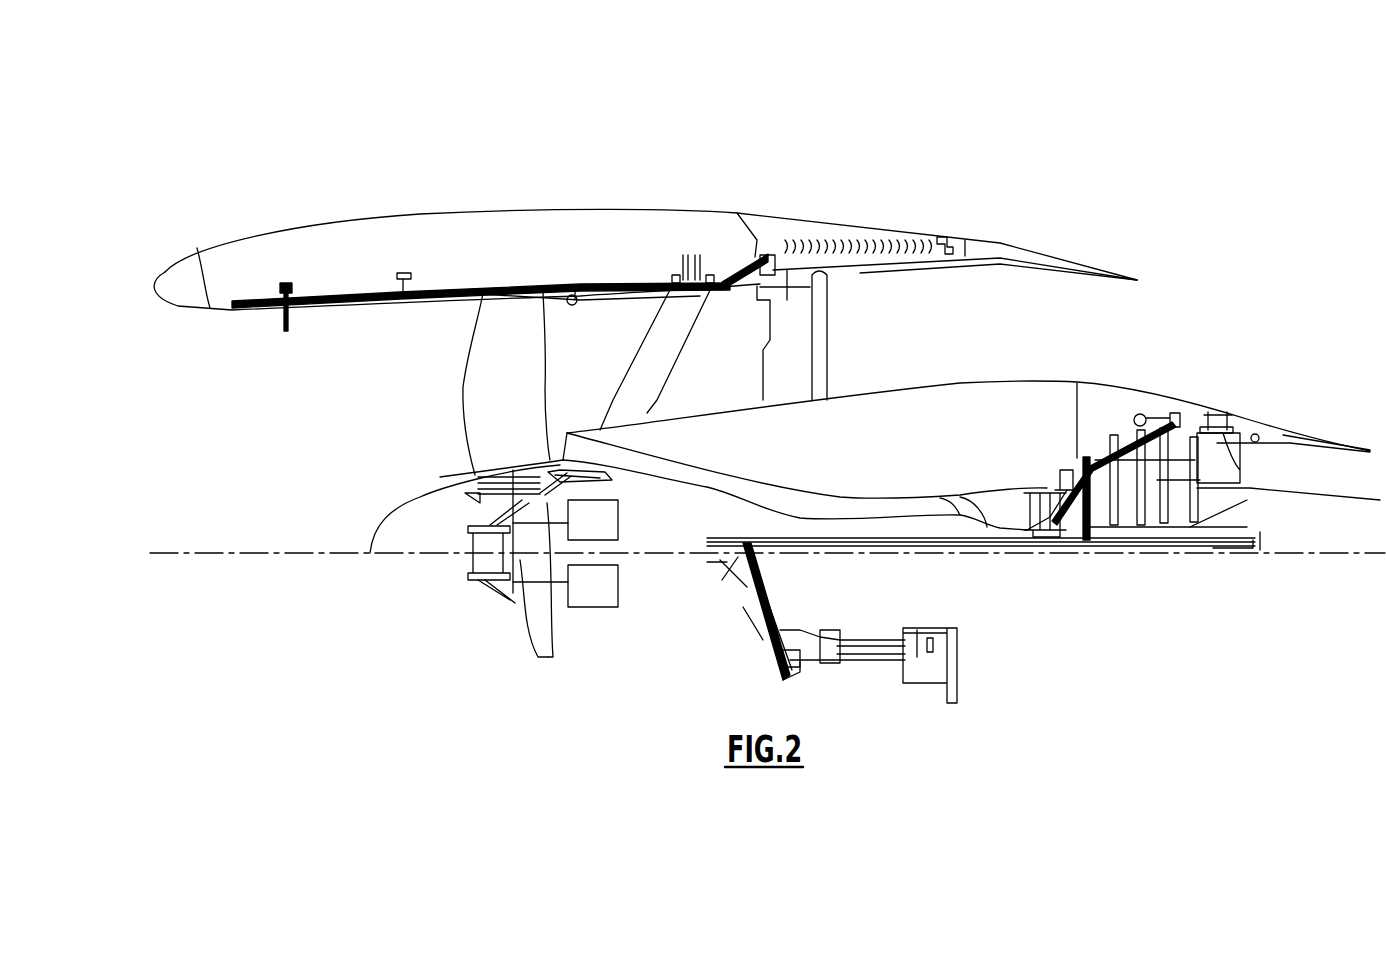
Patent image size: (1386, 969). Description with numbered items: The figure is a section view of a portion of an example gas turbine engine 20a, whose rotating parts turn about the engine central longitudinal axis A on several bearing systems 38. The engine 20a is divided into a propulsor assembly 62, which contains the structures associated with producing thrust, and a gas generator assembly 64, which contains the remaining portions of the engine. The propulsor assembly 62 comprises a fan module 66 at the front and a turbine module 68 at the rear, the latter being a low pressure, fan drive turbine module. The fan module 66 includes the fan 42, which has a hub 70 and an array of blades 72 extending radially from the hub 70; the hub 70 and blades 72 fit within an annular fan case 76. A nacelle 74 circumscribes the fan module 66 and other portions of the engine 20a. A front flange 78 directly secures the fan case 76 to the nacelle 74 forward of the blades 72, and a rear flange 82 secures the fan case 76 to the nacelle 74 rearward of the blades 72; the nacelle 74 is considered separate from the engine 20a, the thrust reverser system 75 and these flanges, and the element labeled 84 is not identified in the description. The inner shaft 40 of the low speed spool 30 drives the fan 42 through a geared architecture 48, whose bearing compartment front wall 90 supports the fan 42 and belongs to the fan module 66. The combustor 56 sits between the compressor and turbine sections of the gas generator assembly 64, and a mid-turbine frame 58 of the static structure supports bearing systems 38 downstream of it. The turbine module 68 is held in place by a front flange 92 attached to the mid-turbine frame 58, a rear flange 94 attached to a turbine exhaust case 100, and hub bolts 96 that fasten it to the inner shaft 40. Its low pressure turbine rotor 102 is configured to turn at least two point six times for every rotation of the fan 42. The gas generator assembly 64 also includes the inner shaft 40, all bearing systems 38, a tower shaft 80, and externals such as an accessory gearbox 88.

The gas turbine engine 20a is at (1217, 303).
The low speed spool 30 is at (940, 556).
The bearing systems 38 is at (1100, 540).
The inner shaft 40 is at (1097, 547).
The fan 42 is at (523, 370).
The geared architecture 48 is at (591, 607).
The combustor 56 is at (987, 507).
The mid-turbine frame 58 is at (1065, 470).
The propulsor assembly 62 is at (477, 583).
The gas generator assembly 64 is at (916, 340).
The fan module 66 is at (417, 378).
The turbine module 68 is at (1173, 413).
The hub 70 is at (400, 507).
The blades 72 is at (460, 413).
The nacelle 74 is at (483, 212).
The thrust reverser system 75 is at (890, 226).
The fan case 76 is at (580, 295).
The front flange 78 is at (432, 285).
The tower shaft 80 is at (777, 610).
The rear flange 82 is at (718, 273).
The leading edge 84 is at (170, 283).
The accessory gearbox 88 is at (958, 653).
The bearing compartment front wall 90 is at (545, 655).
The front flange 92 is at (1077, 400).
The rear flange 94 is at (1173, 415).
The hub bolts 96 is at (1140, 543).
The turbine exhaust case 100 is at (1245, 470).
The low pressure turbine rotor 102 is at (1163, 537).
The engine central longitudinal axis A is at (1323, 546).